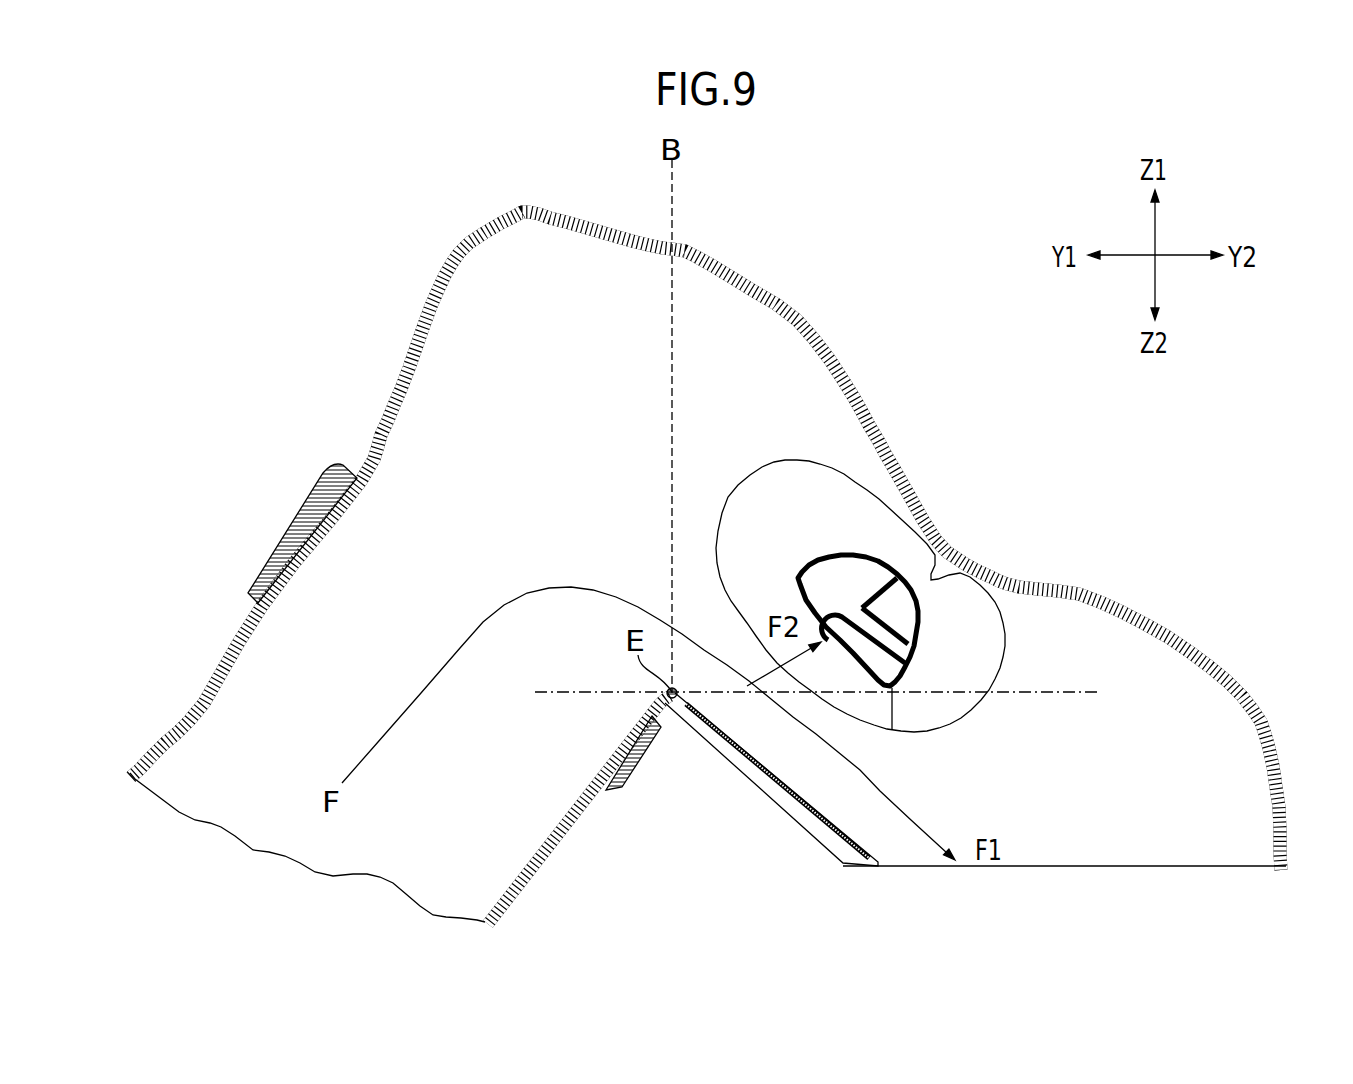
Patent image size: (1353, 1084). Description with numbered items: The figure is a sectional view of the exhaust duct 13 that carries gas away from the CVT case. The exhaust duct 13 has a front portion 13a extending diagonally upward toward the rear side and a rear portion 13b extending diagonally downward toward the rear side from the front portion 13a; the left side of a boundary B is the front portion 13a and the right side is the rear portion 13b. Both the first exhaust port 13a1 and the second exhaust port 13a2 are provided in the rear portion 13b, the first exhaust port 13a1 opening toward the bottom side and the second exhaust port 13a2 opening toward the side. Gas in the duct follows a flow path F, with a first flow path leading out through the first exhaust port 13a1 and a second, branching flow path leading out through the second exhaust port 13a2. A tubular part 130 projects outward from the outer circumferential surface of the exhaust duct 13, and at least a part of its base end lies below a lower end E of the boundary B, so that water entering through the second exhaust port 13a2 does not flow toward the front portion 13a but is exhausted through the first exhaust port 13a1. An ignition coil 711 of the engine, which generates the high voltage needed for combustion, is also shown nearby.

The exhaust duct 13 is at (445, 265).
The front portion 13a is at (735, 178).
The rear portion 13b is at (771, 514).
The first exhaust port 13a1 is at (1150, 868).
The second exhaust port 13a2 is at (828, 568).
The ignition coil 711 is at (900, 607).
The tubular part 130 is at (975, 706).